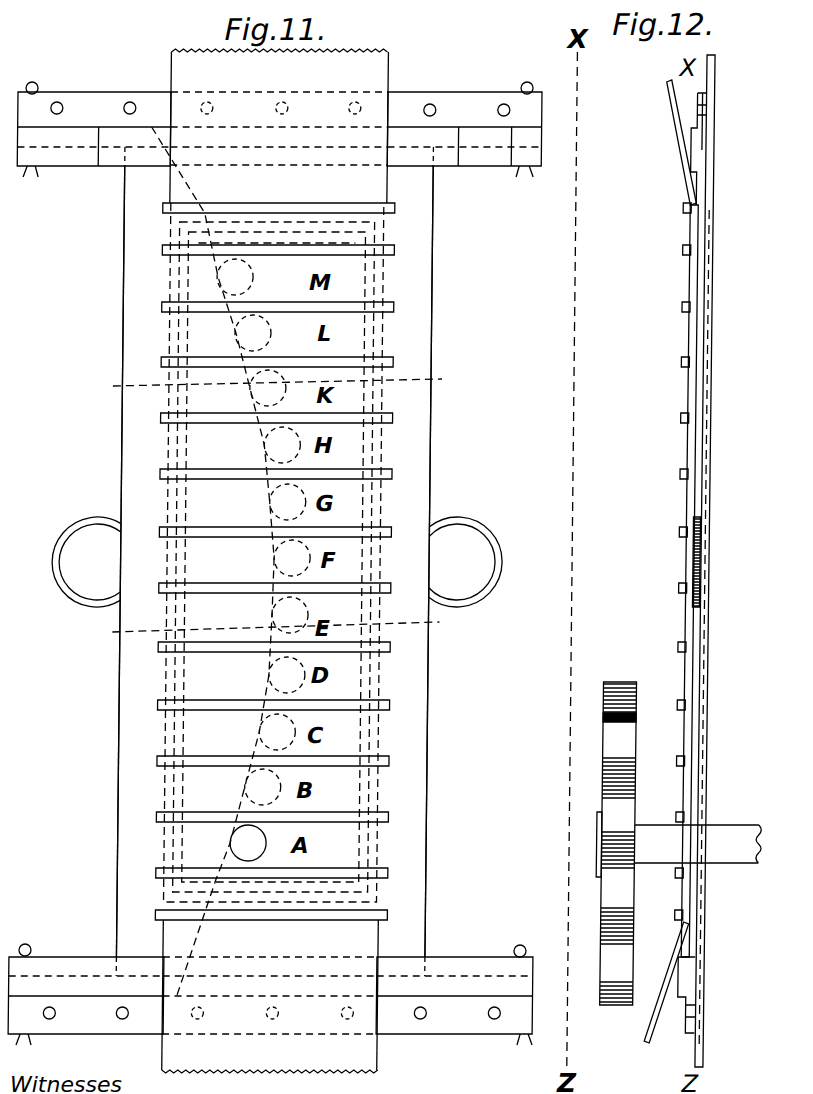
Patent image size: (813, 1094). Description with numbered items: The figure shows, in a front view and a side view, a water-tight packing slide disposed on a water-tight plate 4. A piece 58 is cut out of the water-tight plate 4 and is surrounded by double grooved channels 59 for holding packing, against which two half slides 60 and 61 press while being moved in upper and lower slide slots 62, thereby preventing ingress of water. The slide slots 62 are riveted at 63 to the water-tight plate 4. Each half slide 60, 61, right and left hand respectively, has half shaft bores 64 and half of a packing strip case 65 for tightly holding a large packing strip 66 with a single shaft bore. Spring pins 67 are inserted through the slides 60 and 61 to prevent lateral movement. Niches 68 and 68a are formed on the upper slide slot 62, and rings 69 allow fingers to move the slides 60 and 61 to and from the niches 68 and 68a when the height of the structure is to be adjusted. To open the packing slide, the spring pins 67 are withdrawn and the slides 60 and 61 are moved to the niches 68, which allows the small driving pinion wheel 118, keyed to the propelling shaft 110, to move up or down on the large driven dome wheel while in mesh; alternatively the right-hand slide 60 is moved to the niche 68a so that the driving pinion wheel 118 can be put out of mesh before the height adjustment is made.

In FIG. 11, the water-tight plate 4 is at (293, 508).
In FIG. 12, the water-tight plate 4 is at (715, 78).
In FIG. 11, the piece cut out of the water-tight plate 58 is at (214, 317).
In FIG. 11, the double grooved channels 59 is at (183, 445).
In FIG. 12, the double grooved channels 59 is at (712, 265).
In FIG. 11, the half slide 60 is at (418, 235).
In FIG. 12, the half slide 60 is at (700, 335).
In FIG. 11, the half slide 61 is at (136, 252).
In FIG. 11, the slide slots 62 is at (88, 106).
In FIG. 12, the slide slots 62 is at (712, 148).
In FIG. 11, the rivets 63 is at (131, 103).
In FIG. 12, the rivets 63 is at (715, 112).
In FIG. 11, the half shaft bores 64 is at (275, 503).
In FIG. 11, the half of a packing strip case 65 is at (164, 703).
In FIG. 12, the half of a packing strip case 65 is at (685, 365).
In FIG. 11, the large packing strip 66 is at (450, 941).
In FIG. 12, the large packing strip 66 is at (671, 120).
In FIG. 11, the spring pins 67 is at (33, 82).
In FIG. 11, the niches 68 is at (100, 167).
In FIG. 11, the niche 68a is at (512, 167).
In FIG. 11, the rings 69 is at (277, 562).
In FIG. 12, the rings 69 is at (699, 526).
In FIG. 12, the propelling shaft 110 is at (749, 838).
In FIG. 12, the driving pinion wheel 118 is at (611, 800).